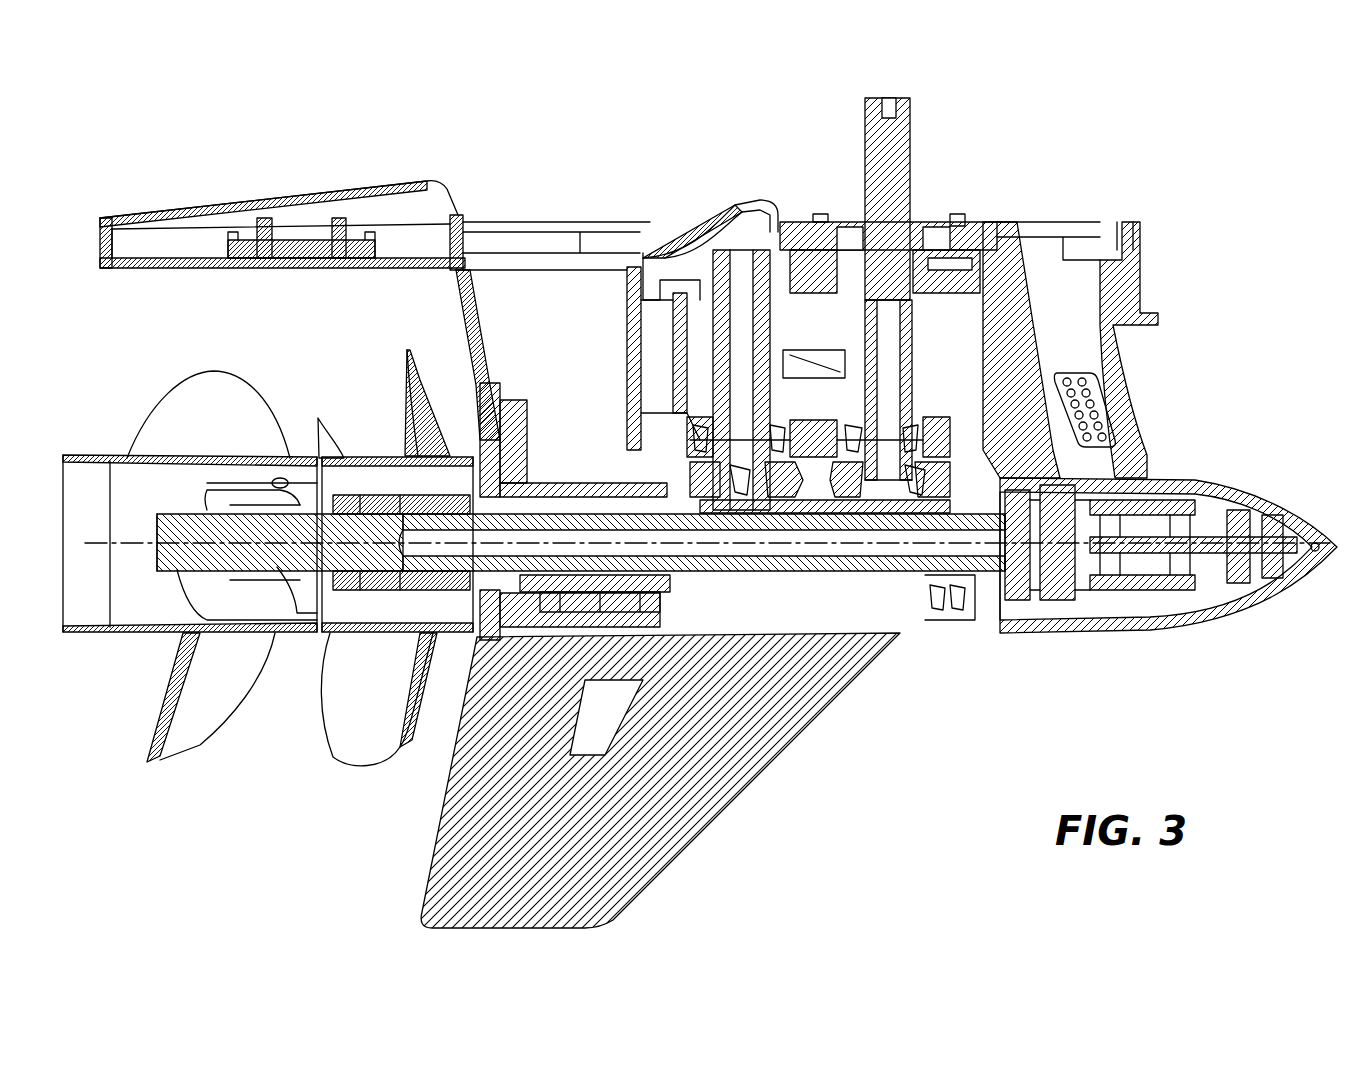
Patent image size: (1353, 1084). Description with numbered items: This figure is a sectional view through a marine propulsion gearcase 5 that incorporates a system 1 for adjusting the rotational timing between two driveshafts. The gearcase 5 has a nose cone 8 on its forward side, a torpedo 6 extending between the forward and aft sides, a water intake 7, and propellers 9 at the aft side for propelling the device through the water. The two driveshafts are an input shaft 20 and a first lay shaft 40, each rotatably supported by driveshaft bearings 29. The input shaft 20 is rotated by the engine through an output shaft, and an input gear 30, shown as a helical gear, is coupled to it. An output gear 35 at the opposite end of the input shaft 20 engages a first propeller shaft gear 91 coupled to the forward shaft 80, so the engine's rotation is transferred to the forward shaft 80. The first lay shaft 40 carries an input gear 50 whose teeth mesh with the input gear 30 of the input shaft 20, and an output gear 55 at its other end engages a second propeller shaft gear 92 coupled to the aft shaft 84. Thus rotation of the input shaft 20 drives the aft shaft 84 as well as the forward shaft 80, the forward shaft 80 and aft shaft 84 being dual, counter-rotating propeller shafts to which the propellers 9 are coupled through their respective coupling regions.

The system 1 is at (1292, 159).
The gearcase 5 is at (1142, 262).
The torpedo 6 is at (1083, 632).
The water intake 7 is at (1118, 455).
The nose cone 8 is at (1302, 575).
The propellers 9 is at (178, 732).
The input shaft 20 is at (912, 140).
The driveshaft bearings 29 is at (1020, 240).
The input gear 30 is at (985, 225).
The output gear 35 is at (850, 478).
The first lay shaft 40 is at (738, 255).
The input gear 50 is at (675, 255).
The output gear 55 is at (800, 478).
The forward shaft 80 is at (778, 480).
The aft shaft 84 is at (540, 600).
The first propeller shaft gear 91 is at (938, 580).
The second propeller shaft gear 92 is at (690, 605).